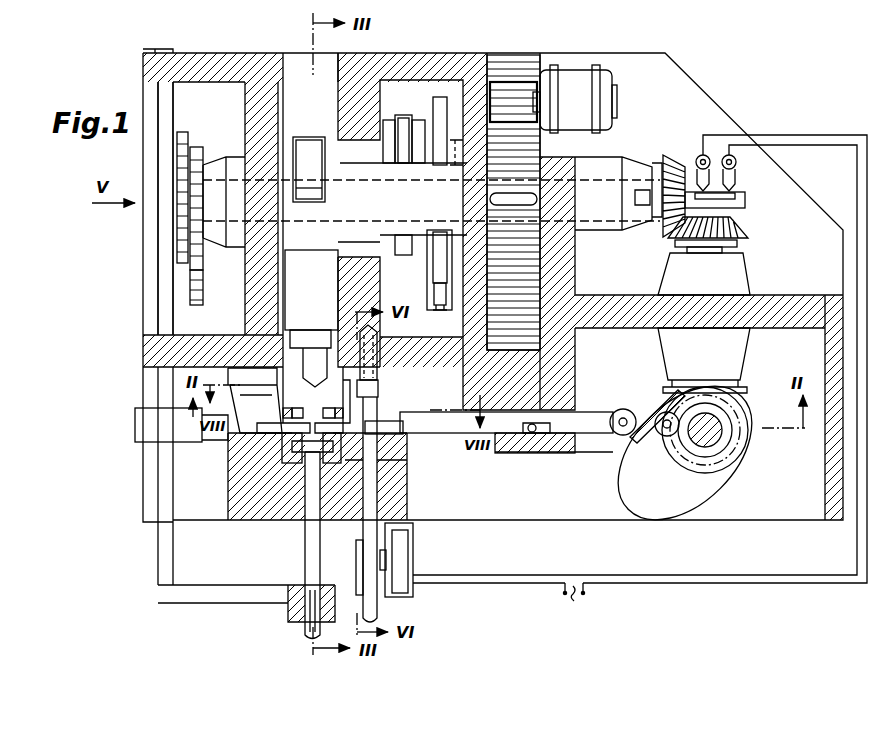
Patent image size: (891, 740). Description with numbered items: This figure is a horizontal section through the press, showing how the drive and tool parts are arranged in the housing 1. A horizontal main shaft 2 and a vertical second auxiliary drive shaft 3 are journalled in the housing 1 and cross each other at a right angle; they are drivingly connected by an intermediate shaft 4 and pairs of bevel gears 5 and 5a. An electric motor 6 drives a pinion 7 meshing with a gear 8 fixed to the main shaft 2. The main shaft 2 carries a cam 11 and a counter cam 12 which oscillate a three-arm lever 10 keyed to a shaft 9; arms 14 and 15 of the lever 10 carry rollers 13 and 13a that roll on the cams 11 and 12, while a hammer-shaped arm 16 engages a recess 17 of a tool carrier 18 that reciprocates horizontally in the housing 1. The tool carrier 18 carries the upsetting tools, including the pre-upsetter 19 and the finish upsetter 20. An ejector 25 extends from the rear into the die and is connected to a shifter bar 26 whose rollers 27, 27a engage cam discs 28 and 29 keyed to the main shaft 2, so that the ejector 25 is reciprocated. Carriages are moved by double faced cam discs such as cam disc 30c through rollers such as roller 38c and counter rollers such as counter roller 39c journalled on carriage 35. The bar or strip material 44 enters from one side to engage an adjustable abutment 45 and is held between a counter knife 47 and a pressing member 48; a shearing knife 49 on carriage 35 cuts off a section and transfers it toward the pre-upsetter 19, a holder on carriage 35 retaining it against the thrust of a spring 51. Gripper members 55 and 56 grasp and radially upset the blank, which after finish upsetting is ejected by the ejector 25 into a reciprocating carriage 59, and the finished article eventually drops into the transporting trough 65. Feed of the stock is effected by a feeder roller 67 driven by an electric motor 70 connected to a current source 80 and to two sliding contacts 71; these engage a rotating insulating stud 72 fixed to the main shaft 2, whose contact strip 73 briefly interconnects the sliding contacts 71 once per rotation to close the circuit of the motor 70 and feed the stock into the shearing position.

The housing 1 is at (672, 77).
The main shaft 2 is at (603, 178).
The second auxiliary drive shaft 3 is at (718, 441).
The intermediate shaft 4 is at (728, 251).
The bevel gear 5 is at (680, 240).
The bevel gear 5a is at (732, 412).
The electric motor 6 is at (572, 78).
The pinion 7 is at (534, 92).
The gear 8 is at (507, 68).
The shaft 9 is at (316, 228).
The three-arm lever 10 is at (457, 145).
The cam 11 is at (403, 256).
The counter cam 12 is at (440, 96).
The roller 13 is at (401, 117).
The roller 13a is at (444, 310).
The arm 14 is at (417, 120).
The arm 15 is at (428, 290).
The hammer-shaped arm 16 is at (311, 140).
The recess 17 is at (291, 140).
The tool carrier 18 is at (317, 297).
The pre-presser or upsetter 19 is at (300, 340).
The finish presser or upsetter 20 is at (312, 384).
The ejector 25 is at (305, 548).
The shifter bar 26 is at (165, 272).
The roller 27 is at (185, 140).
The roller 27a is at (200, 289).
The cam disc 28 is at (183, 222).
The cam disc 29 is at (205, 160).
The cam disc 30c is at (634, 483).
The carriage 35 is at (560, 433).
The roller 38c is at (615, 413).
The counter roller 39c is at (660, 412).
The bar or strip material 44 is at (378, 608).
The adjustable abutment 45 is at (379, 383).
The counter knife 47 is at (352, 465).
The pressing member 48 is at (352, 452).
The shearing knife 49 is at (398, 421).
The spring 51 is at (531, 435).
The right-hand gripper member 55 is at (248, 468).
The left-hand gripper member 56 is at (250, 425).
The reciprocating carriage 59 is at (338, 408).
The transporting trough 65 is at (140, 425).
The feeder roller 67 is at (357, 556).
The electric motor 70 is at (400, 547).
The sliding contacts 71 is at (731, 156).
The rotating stud 72 is at (694, 195).
The contact strip 73 is at (736, 198).
The current source 80 is at (583, 596).